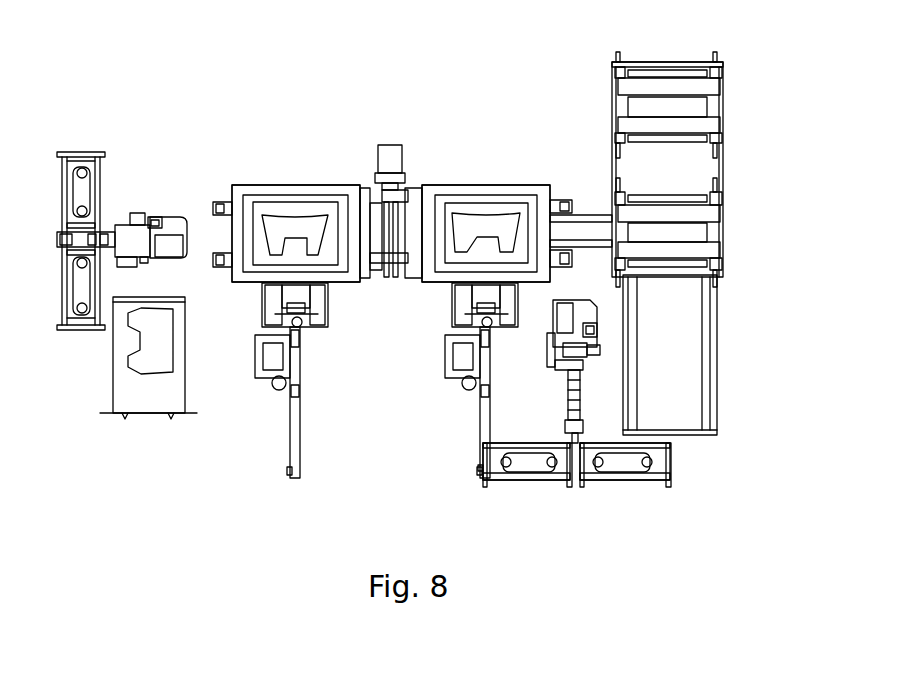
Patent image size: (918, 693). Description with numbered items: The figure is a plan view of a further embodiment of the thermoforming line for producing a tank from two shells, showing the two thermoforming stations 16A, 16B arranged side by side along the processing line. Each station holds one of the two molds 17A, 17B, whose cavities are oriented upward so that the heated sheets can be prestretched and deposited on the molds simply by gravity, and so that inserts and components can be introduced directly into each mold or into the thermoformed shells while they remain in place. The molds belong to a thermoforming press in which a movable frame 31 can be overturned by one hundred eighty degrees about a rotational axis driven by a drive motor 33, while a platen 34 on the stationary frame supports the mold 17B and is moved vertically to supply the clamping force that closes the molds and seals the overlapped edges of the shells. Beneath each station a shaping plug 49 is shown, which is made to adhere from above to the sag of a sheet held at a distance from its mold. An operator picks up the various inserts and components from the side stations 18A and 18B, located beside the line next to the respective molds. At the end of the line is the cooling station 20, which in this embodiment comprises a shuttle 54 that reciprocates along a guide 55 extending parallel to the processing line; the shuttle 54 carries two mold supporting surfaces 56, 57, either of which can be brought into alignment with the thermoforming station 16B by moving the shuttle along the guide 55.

The thermoforming station 16A is at (347, 157).
The thermoforming station 16B is at (458, 158).
The mold 17A is at (268, 207).
The mold 17B is at (500, 207).
The side station 18A is at (127, 267).
The side station 18B is at (604, 393).
The cooling station 20 is at (813, 303).
The movable frame 31 is at (317, 190).
The drive motor 33 is at (395, 146).
The platen 34 is at (540, 190).
The shaping plug 49 is at (272, 315).
The shuttle 54 is at (695, 167).
The guide 55 is at (688, 372).
The mold supporting surface 56 is at (700, 231).
The mold supporting surface 57 is at (697, 107).